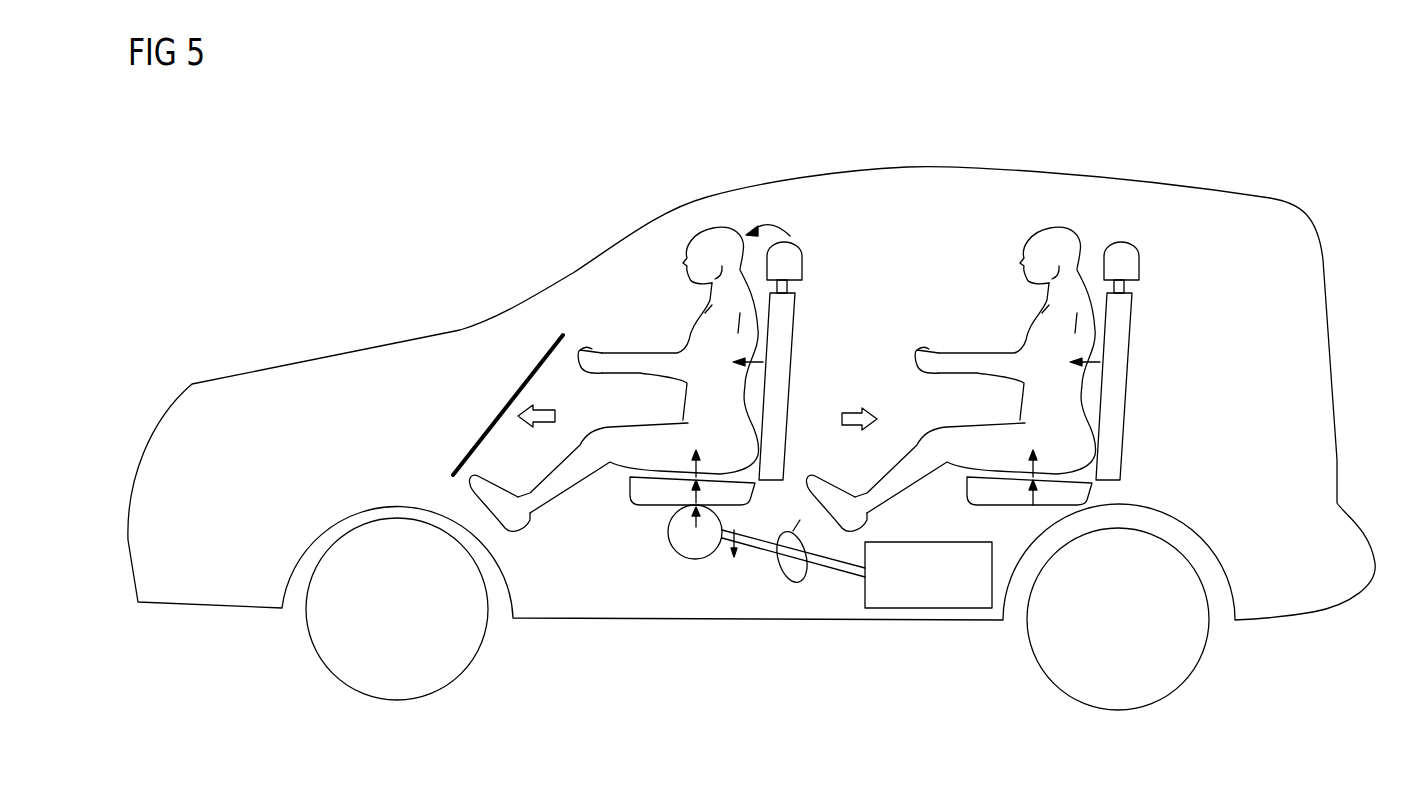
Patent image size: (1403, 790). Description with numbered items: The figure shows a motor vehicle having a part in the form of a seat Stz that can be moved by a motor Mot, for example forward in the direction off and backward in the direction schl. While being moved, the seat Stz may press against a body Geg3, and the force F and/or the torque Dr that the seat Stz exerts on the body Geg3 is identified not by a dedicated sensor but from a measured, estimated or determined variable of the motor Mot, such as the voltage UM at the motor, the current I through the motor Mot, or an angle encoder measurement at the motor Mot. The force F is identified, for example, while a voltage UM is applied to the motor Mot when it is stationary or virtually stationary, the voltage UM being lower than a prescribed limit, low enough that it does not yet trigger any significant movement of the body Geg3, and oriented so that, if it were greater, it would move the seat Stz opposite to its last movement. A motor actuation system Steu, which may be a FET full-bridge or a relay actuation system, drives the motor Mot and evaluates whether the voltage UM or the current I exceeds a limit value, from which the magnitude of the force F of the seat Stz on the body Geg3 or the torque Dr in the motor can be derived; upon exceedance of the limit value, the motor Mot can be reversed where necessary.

The body Geg3 is at (733, 235).
The seat Stz is at (788, 327).
The torque Dr is at (771, 219).
The motor Mot is at (695, 559).
The motor actuation system Steu is at (932, 608).
The voltage at the motor UM is at (753, 524).
The current through the motor I is at (869, 518).
The force F is at (896, 440).
The forward movement direction off is at (545, 404).
The backward movement direction schl is at (866, 405).